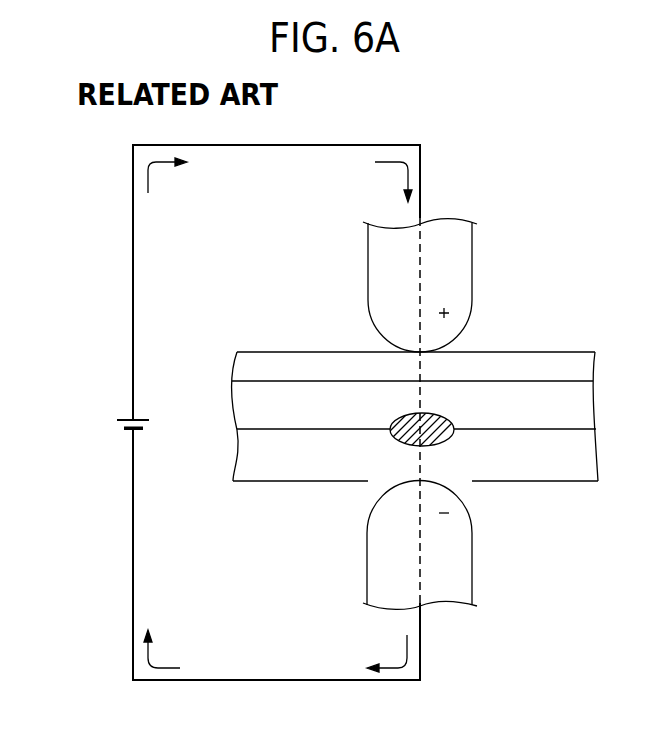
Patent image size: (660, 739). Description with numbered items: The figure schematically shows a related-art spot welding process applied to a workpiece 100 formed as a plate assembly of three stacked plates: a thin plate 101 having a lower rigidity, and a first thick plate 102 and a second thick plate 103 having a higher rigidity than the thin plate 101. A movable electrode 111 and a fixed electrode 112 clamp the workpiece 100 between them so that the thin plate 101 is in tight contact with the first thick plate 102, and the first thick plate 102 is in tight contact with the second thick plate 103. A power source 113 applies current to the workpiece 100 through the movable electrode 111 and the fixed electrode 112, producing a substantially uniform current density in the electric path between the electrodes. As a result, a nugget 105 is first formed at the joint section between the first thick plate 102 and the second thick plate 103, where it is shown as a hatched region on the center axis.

The workpiece 100 is at (443, 397).
The thin plate 101 is at (578, 367).
The first thick plate 102 is at (578, 405).
The second thick plate 103 is at (577, 455).
The nugget 105 is at (452, 438).
The movable electrode 111 is at (460, 268).
The fixed electrode 112 is at (460, 570).
The power source 113 is at (128, 418).